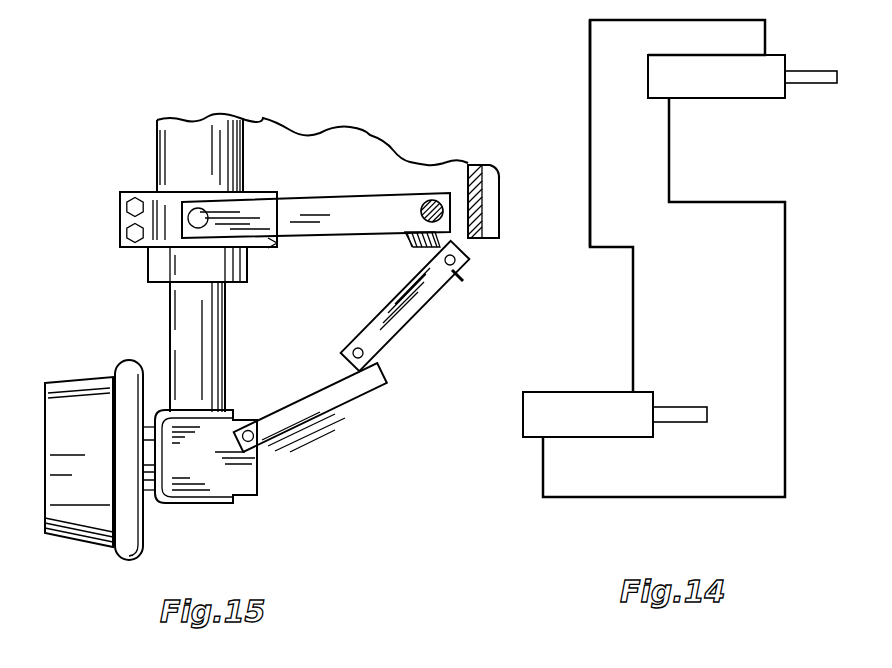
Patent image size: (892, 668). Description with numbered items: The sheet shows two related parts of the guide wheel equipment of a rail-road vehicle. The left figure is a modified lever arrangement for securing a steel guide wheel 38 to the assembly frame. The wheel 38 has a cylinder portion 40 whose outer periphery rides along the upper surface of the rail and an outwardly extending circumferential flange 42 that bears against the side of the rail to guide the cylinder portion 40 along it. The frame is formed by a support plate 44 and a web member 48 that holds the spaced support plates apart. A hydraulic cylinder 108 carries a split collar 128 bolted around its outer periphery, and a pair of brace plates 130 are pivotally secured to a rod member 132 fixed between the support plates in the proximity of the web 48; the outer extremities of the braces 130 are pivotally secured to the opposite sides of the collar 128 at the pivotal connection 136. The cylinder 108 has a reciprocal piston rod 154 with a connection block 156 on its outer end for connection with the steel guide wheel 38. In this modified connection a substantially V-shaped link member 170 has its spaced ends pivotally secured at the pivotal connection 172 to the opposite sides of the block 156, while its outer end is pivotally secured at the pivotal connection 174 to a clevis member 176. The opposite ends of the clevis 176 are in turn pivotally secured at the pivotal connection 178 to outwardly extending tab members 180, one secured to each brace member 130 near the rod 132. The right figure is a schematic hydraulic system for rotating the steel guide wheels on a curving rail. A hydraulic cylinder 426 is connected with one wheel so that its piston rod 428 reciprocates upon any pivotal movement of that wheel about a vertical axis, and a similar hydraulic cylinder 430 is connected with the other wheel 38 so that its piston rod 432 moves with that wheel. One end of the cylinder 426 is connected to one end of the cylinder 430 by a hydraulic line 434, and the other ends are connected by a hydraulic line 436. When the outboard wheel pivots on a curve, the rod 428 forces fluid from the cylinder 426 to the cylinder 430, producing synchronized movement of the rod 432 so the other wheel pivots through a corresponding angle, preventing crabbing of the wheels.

In FIG. 15, the flanged steel wheel 38 is at (91, 476).
In FIG. 15, the cylinder portion 40 is at (74, 395).
In FIG. 15, the circumferential flange 42 is at (133, 375).
In FIG. 15, the support plate 44 is at (397, 170).
In FIG. 15, the web member 48 is at (480, 203).
In FIG. 15, the cylinder 108 is at (196, 161).
In FIG. 15, the split collar 128 is at (128, 233).
In FIG. 15, the brace plate 130 is at (323, 205).
In FIG. 15, the rod member 132 is at (437, 198).
In FIG. 15, the pivotal connection 136 is at (208, 218).
In FIG. 15, the piston rod 154 is at (195, 313).
In FIG. 15, the connection block 156 is at (225, 477).
In FIG. 15, the V-shaped link member 170 is at (310, 408).
In FIG. 15, the pivotal connection 172 is at (249, 428).
In FIG. 15, the pivotal connection 174 is at (353, 351).
In FIG. 15, the clevis member 176 is at (410, 312).
In FIG. 15, the pivotal connection 178 is at (454, 265).
In FIG. 15, the tab member 180 is at (435, 250).
In FIG. 14, the hydraulic cylinder 426 is at (581, 400).
In FIG. 14, the piston rod 428 is at (687, 412).
In FIG. 14, the hydraulic cylinder 430 is at (742, 85).
In FIG. 14, the piston rod 432 is at (808, 78).
In FIG. 14, the hydraulic line 434 is at (785, 345).
In FIG. 14, the hydraulic line 436 is at (590, 40).